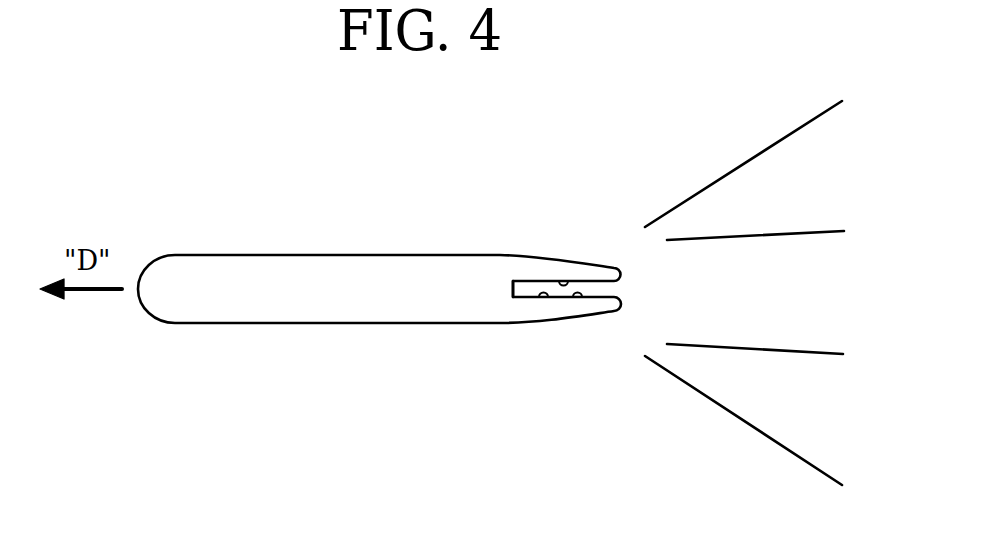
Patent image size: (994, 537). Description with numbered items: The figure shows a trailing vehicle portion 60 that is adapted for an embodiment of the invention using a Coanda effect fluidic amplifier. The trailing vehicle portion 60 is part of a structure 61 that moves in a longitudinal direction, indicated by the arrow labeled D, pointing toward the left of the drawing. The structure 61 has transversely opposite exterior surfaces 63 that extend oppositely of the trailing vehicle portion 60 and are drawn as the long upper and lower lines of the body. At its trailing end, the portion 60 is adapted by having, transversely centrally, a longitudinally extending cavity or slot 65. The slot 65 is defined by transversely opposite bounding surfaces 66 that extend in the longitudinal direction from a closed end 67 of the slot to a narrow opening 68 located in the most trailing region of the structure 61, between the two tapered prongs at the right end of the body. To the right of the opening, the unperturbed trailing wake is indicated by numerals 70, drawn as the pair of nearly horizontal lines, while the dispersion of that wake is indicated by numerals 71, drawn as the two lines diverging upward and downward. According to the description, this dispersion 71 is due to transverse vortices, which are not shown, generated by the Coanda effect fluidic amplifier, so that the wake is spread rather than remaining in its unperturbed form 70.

The trailing vehicle portion 60 is at (427, 300).
The structure 61 is at (379, 300).
The exterior surfaces 63 is at (393, 255).
The slot 65 is at (542, 298).
The bounding surfaces 66 is at (563, 283).
The closed end 67 is at (532, 282).
The narrow opening 68 is at (605, 290).
The unperturbed trailing wake 70 is at (782, 235).
The dispersion 71 is at (783, 138).